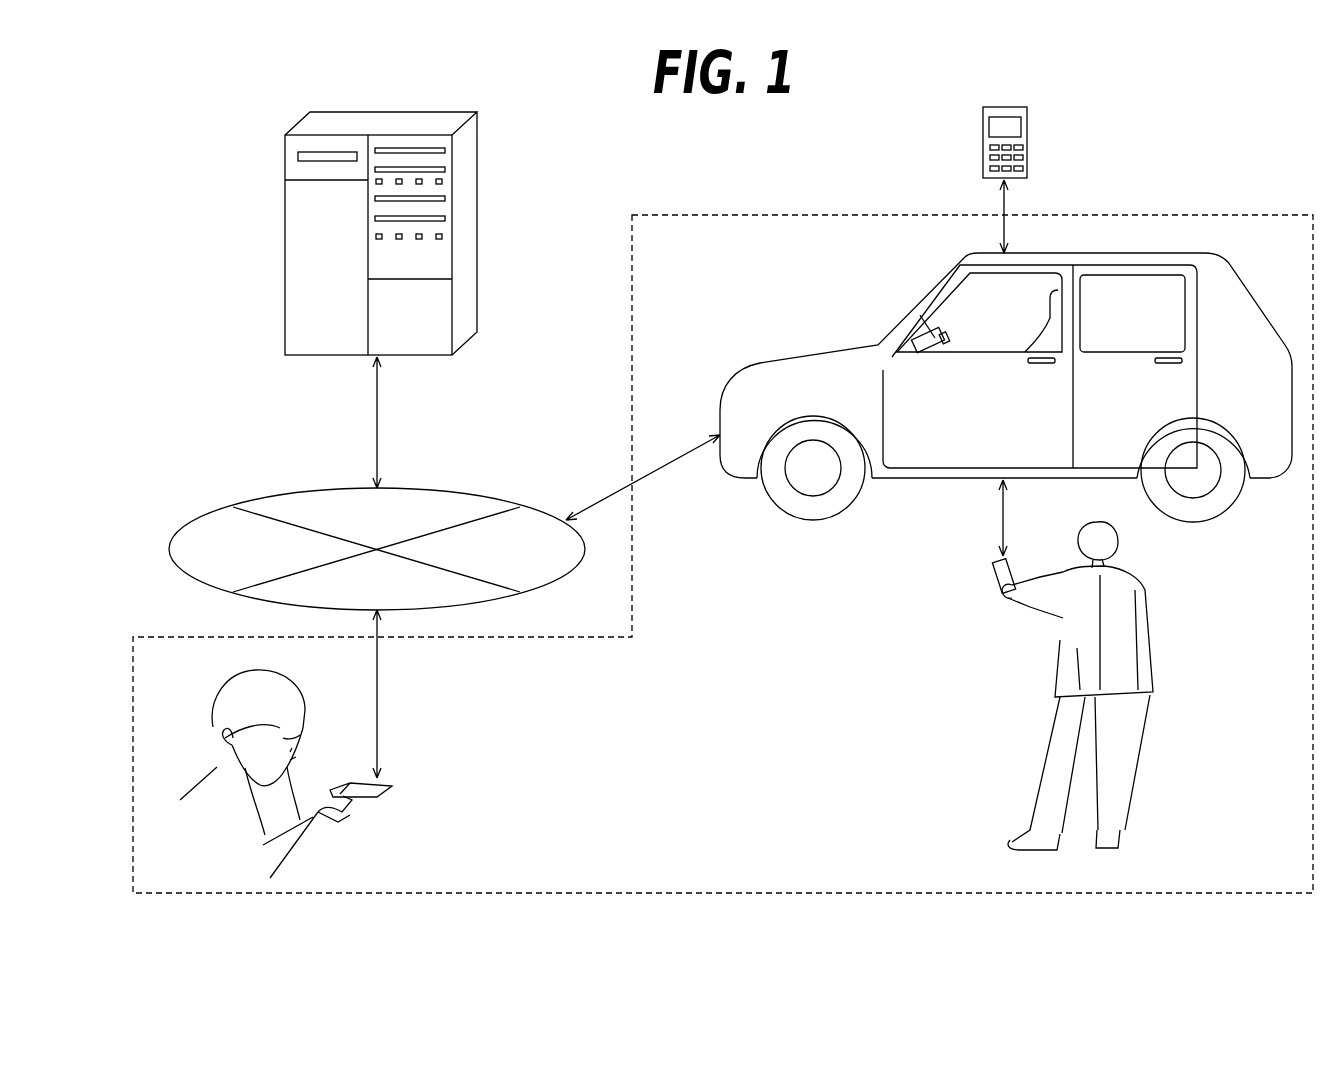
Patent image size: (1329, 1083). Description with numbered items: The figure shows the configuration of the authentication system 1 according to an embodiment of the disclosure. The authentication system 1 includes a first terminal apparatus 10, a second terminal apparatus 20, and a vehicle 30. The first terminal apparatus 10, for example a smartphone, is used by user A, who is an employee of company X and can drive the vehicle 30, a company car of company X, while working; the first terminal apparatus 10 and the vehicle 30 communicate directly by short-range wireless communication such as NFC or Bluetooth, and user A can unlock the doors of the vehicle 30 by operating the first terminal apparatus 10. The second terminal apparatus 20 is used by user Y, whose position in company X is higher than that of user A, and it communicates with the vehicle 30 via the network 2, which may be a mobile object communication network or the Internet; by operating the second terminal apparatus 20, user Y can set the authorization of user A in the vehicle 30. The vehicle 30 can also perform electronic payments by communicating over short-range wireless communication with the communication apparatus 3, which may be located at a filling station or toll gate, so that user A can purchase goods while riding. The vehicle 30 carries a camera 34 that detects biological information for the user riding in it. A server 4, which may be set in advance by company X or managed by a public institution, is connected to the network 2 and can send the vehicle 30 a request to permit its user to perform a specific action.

The authentication system 1 is at (1227, 128).
The network 2 is at (185, 522).
The communication apparatus 3 is at (1030, 124).
The server 4 is at (477, 200).
The first terminal apparatus 10 is at (997, 568).
The second terminal apparatus 20 is at (355, 782).
The vehicle 30 is at (947, 270).
The camera 34 is at (913, 310).
The user A is at (1056, 650).
The company X is at (738, 213).
The user Y is at (224, 693).